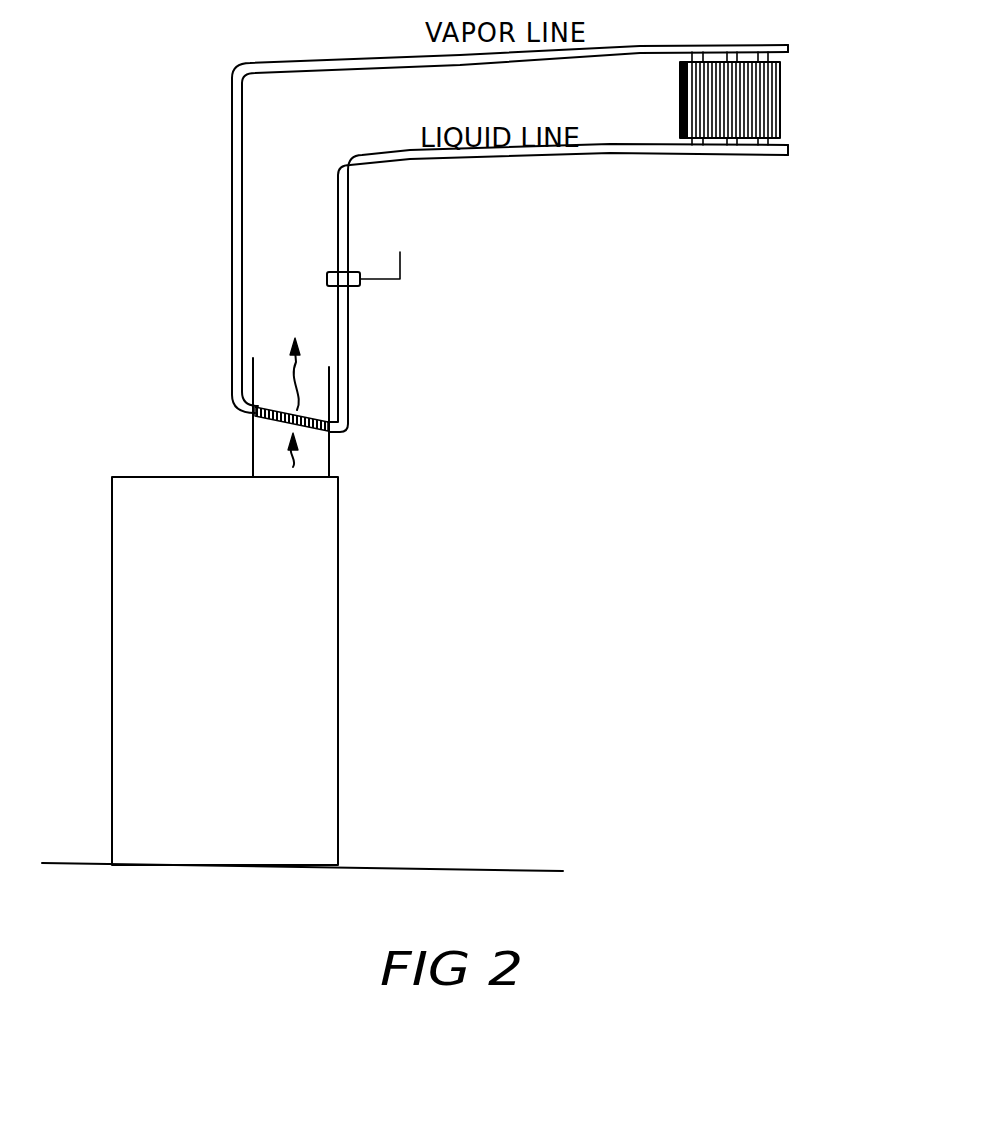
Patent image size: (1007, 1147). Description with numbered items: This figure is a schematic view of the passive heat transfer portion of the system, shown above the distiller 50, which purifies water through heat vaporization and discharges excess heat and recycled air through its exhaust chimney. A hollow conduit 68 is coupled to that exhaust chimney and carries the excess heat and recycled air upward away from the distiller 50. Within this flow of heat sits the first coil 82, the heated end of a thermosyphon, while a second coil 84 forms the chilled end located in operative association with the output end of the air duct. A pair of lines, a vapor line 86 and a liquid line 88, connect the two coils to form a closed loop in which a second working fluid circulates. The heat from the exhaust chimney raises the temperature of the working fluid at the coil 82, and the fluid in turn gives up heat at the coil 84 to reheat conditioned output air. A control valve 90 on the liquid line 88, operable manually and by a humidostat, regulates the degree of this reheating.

The distiller 50 is at (338, 712).
The conduit 68 is at (257, 445).
The coil 82 is at (303, 415).
The coil 84 is at (780, 100).
The line 86 is at (231, 222).
The line 88 is at (345, 316).
The control valve 90 is at (348, 272).